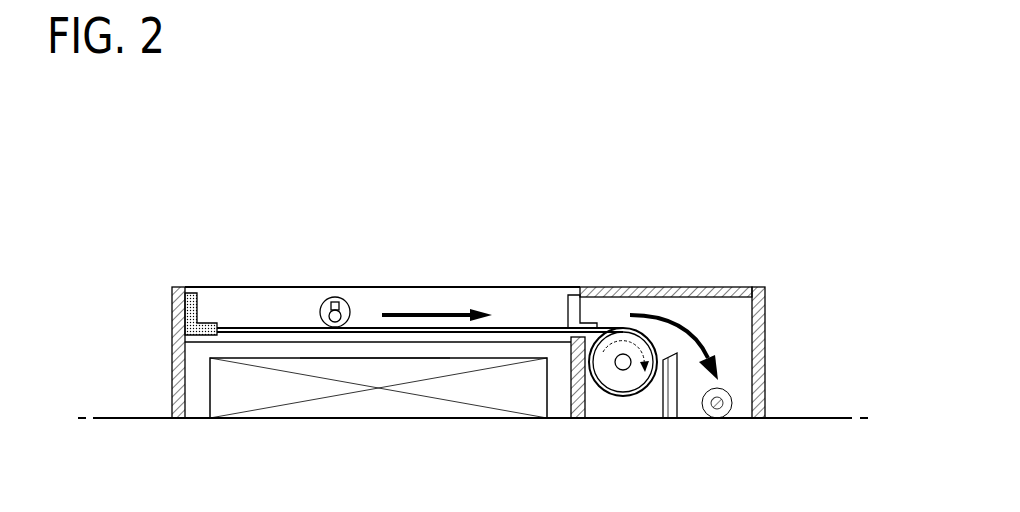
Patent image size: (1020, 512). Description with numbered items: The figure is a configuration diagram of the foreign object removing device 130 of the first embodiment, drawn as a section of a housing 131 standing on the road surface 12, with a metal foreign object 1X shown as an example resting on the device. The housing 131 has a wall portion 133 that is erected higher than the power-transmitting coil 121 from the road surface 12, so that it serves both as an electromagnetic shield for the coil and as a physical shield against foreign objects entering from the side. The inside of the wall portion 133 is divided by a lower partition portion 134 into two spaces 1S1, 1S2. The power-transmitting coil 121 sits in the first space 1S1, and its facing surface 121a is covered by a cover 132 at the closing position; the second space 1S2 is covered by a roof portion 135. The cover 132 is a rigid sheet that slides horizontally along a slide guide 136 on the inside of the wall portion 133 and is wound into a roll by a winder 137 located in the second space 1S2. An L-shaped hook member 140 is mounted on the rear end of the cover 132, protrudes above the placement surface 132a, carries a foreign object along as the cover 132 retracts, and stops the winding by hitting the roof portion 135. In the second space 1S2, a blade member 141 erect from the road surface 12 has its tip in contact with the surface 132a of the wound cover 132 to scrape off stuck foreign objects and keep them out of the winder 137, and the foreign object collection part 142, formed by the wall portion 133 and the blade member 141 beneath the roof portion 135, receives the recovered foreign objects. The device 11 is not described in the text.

The apparatus 11 is at (128, 203).
The road surface 12 is at (122, 417).
The power-transmitting coil 121 is at (210, 392).
The facing surface 121a is at (372, 352).
The foreign object removing device 130 is at (462, 278).
The housing 131 is at (165, 318).
The cover 132 is at (300, 326).
The surface 132a is at (369, 316).
The wall portion 133 is at (171, 286).
The partition portion 134 is at (571, 385).
The roof portion 135 is at (690, 287).
The slide guide 136 is at (510, 328).
The winder 137 is at (628, 372).
The hook member 140 is at (190, 287).
The blade member 141 is at (673, 350).
The foreign object collection part 142 is at (742, 365).
The foreign object 1X is at (335, 297).
The space 1S1 is at (270, 335).
The space 1S2 is at (657, 298).